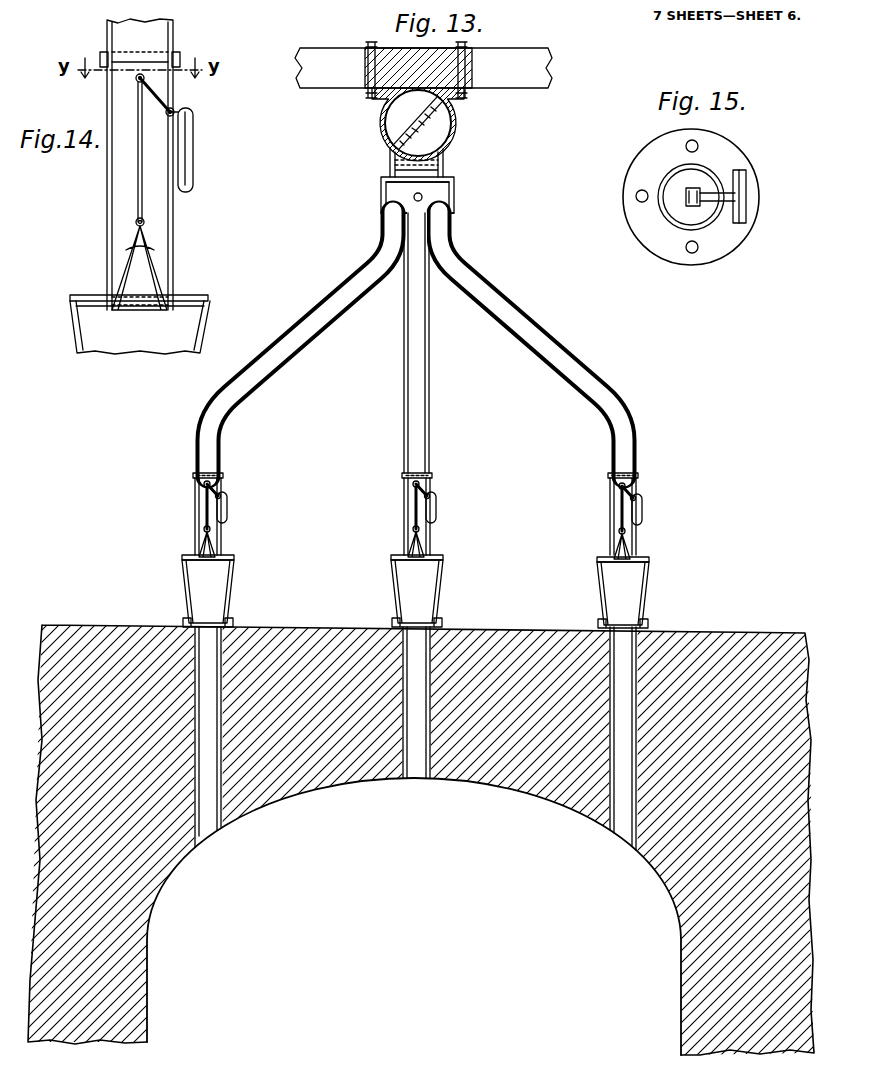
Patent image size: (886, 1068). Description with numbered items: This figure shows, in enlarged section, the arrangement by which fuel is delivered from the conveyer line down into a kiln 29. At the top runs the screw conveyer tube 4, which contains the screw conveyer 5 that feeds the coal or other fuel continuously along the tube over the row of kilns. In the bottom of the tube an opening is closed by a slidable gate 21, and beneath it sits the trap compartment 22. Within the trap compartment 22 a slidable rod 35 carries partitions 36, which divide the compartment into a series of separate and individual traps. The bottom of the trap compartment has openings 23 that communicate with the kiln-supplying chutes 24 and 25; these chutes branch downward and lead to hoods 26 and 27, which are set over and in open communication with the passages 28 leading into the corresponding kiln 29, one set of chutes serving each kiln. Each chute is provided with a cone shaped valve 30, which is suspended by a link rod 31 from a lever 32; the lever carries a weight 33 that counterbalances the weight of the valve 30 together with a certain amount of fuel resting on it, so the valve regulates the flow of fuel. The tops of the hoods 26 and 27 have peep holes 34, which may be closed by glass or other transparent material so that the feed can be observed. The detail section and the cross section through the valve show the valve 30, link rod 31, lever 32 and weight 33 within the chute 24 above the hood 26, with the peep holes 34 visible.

In FIG. 13, the screw conveyer tube 4 is at (383, 125).
In FIG. 13, the screw conveyer 5 is at (440, 139).
In FIG. 13, the slidable gate 21 is at (390, 166).
In FIG. 13, the trap compartment 22 is at (455, 196).
In FIG. 13, the openings 23 is at (445, 234).
In FIG. 13, the kiln-supplying chute 24 is at (429, 388).
In FIG. 14, the kiln-supplying chute 24 is at (108, 200).
In FIG. 15, the kiln-supplying chute 24 is at (712, 229).
In FIG. 13, the kiln-supplying chute 25 is at (280, 372).
In FIG. 13, the hood 26 is at (437, 600).
In FIG. 14, the hood 26 is at (185, 340).
In FIG. 15, the hood 26 is at (732, 248).
In FIG. 13, the hood 27 is at (217, 602).
In FIG. 13, the passage 28 is at (212, 840).
In FIG. 13, the kiln 29 is at (443, 814).
In FIG. 13, the cone shaped valve 30 is at (214, 550).
In FIG. 14, the cone shaped valve 30 is at (150, 280).
In FIG. 13, the link rod 31 is at (205, 518).
In FIG. 14, the link rod 31 is at (143, 205).
In FIG. 13, the lever 32 is at (212, 486).
In FIG. 14, the lever 32 is at (160, 98).
In FIG. 15, the lever 32 is at (707, 192).
In FIG. 13, the weight 33 is at (230, 517).
In FIG. 14, the weight 33 is at (184, 152).
In FIG. 15, the weight 33 is at (748, 211).
In FIG. 13, the peep hole 34 is at (193, 558).
In FIG. 14, the peep hole 34 is at (88, 300).
In FIG. 15, the peep hole 34 is at (686, 147).
In FIG. 13, the slidable rod 35 is at (414, 197).
In FIG. 13, the partition 36 is at (440, 191).